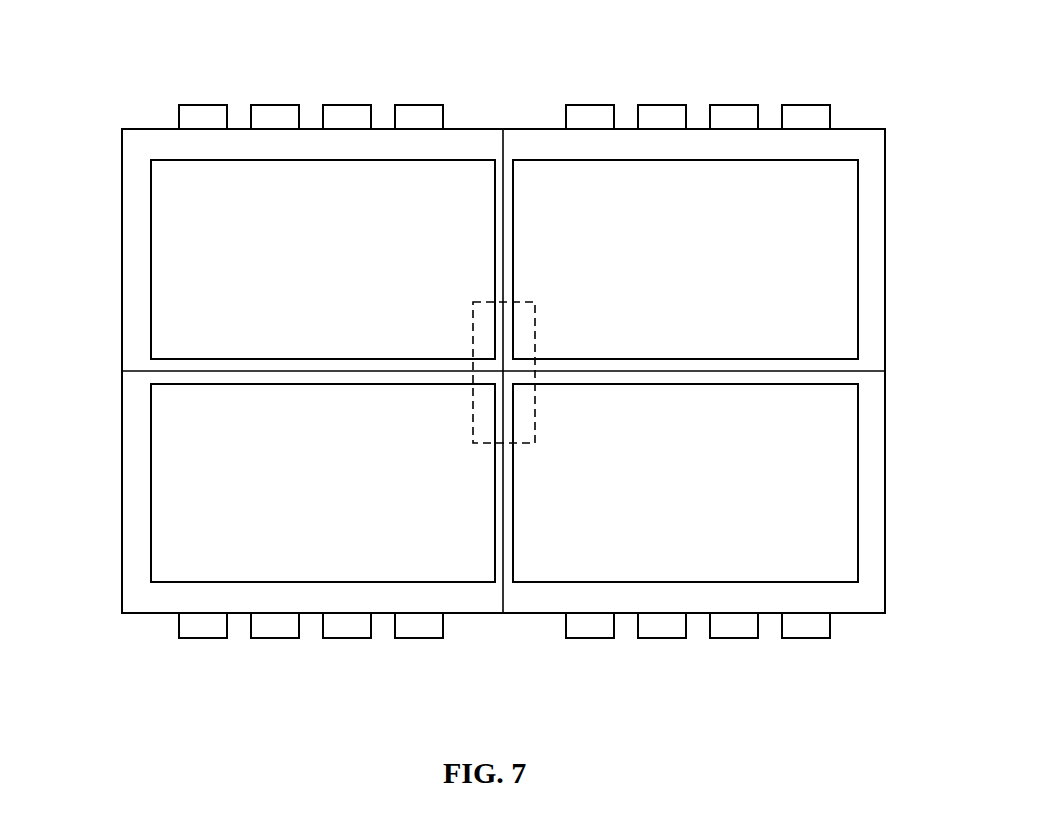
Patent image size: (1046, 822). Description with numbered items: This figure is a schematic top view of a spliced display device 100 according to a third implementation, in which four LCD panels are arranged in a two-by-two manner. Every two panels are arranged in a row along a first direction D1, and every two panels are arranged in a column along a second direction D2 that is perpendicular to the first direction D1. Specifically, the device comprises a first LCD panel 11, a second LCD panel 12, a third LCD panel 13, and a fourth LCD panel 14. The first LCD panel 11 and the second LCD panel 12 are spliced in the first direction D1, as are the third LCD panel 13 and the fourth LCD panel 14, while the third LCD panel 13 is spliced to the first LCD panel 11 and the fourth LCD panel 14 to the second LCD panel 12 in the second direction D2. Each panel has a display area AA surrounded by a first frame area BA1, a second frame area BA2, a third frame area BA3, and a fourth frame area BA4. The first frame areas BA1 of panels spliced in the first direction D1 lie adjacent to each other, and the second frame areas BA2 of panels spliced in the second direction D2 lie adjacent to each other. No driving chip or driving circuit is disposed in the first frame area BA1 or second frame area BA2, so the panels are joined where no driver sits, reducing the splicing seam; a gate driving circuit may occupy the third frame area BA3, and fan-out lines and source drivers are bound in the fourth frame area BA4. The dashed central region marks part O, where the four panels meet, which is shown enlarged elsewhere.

The spliced display device 100 is at (215, 63).
The first LCD panel 11 is at (164, 236).
The second LCD panel 12 is at (828, 234).
The third LCD panel 13 is at (156, 497).
The fourth LCD panel 14 is at (838, 512).
The display area AA is at (170, 282).
The part O is at (536, 328).
The first frame area BA1 is at (500, 133).
The second frame area BA2 is at (155, 366).
The third frame area BA3 is at (137, 321).
The fourth frame area BA4 is at (177, 141).
The first direction D1 is at (60, 705).
The second direction D2 is at (60, 705).